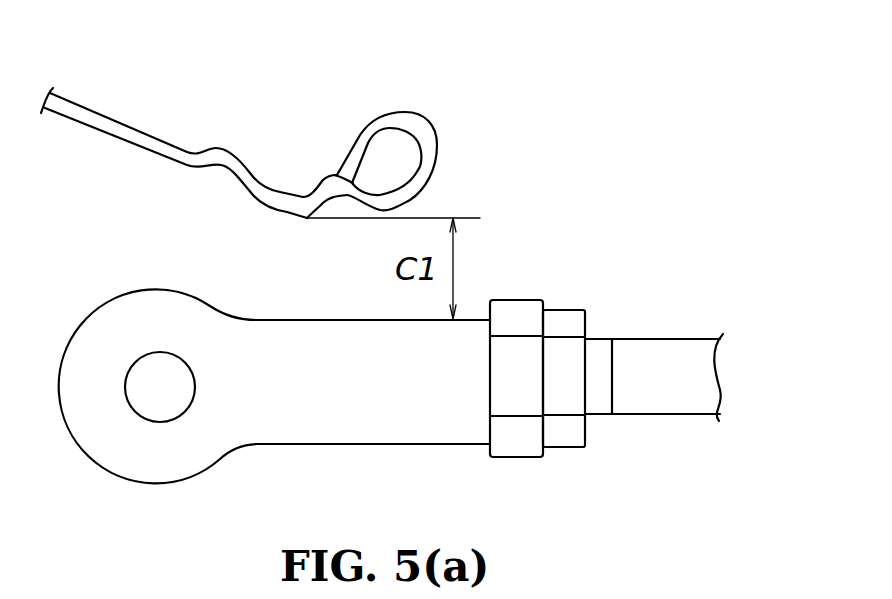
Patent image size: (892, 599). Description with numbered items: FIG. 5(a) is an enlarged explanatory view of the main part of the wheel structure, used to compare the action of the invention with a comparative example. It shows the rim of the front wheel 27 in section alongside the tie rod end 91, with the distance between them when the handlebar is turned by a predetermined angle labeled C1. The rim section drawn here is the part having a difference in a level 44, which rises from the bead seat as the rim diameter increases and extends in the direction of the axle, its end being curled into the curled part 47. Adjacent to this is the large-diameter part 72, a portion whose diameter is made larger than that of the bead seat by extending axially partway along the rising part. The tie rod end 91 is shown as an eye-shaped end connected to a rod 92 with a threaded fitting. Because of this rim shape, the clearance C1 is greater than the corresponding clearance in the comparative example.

The front wheel 27 is at (118, 122).
The part having a difference in a level 44 is at (318, 182).
The curled part 47 is at (421, 115).
The large-diameter part 72 is at (369, 192).
The tie rod end 91 is at (147, 289).
The rod 92 is at (675, 338).